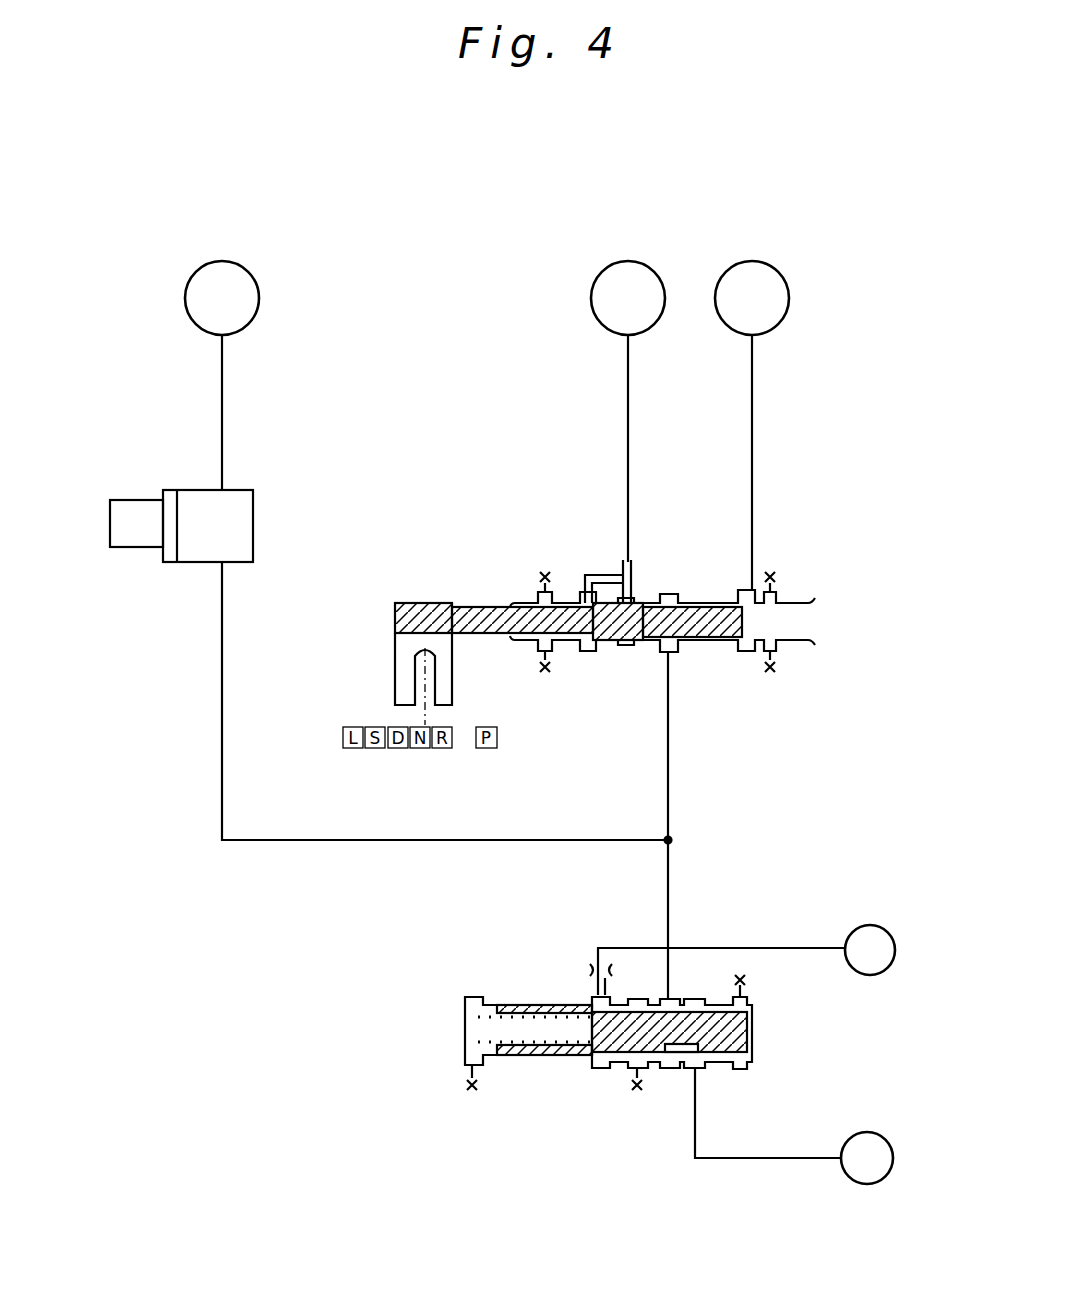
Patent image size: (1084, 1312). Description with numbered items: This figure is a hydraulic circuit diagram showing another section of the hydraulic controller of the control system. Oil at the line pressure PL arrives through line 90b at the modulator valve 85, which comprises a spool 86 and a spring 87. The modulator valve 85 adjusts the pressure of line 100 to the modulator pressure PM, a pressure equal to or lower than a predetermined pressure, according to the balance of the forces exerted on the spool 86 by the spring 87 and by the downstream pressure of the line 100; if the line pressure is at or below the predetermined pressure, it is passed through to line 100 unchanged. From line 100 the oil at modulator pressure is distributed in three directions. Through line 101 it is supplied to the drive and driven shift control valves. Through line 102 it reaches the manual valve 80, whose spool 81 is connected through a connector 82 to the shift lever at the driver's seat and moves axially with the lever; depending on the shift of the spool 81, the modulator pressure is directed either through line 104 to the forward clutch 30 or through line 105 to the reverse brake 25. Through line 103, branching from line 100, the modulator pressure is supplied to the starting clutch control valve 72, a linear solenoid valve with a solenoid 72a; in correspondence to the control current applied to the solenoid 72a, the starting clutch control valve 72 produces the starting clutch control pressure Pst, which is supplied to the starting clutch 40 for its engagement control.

The reverse brake 25 is at (772, 268).
The forward clutch 30 is at (605, 268).
The starting clutch 40 is at (236, 240).
The starting clutch control valve 72 is at (253, 527).
The solenoid 72a is at (130, 540).
The manual valve 80 is at (538, 556).
The spool 81 is at (620, 625).
The connector 82 is at (452, 680).
The modulator valve 85 is at (560, 1078).
The spool 86 is at (722, 1046).
The spring 87 is at (480, 1028).
The line 90b is at (770, 1160).
The line 100 is at (668, 896).
The line 101 is at (786, 946).
The line 102 is at (668, 766).
The line 103 is at (316, 842).
The line 104 is at (628, 478).
The line 105 is at (752, 478).